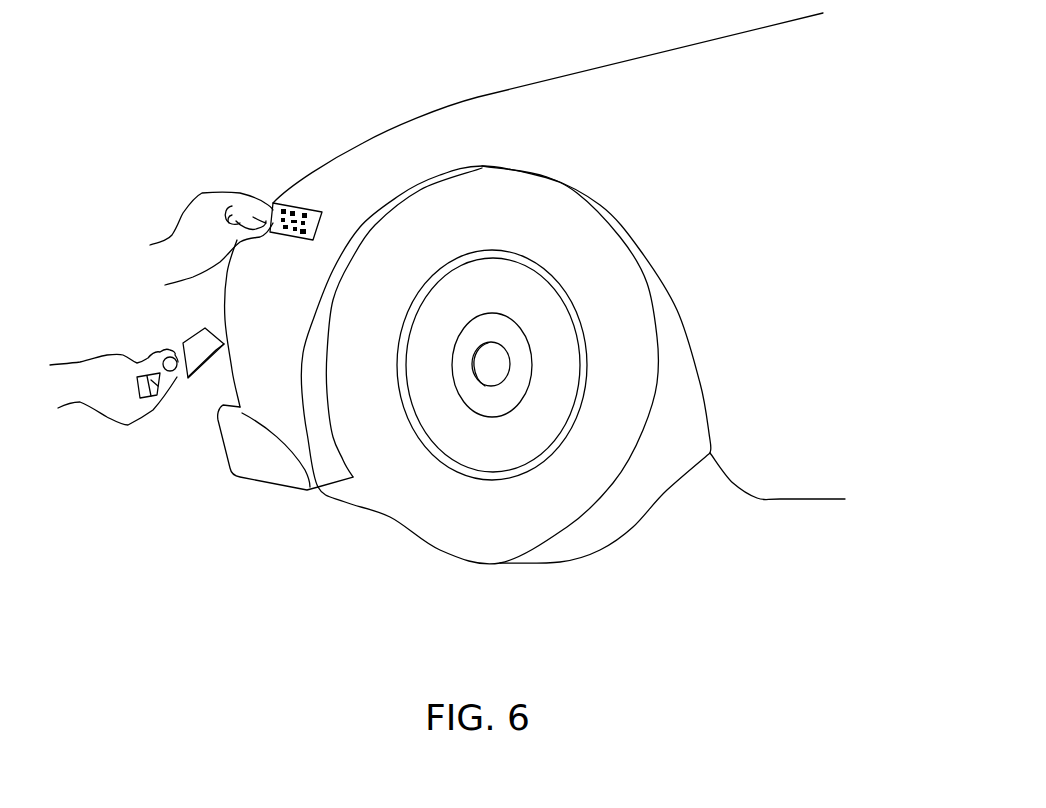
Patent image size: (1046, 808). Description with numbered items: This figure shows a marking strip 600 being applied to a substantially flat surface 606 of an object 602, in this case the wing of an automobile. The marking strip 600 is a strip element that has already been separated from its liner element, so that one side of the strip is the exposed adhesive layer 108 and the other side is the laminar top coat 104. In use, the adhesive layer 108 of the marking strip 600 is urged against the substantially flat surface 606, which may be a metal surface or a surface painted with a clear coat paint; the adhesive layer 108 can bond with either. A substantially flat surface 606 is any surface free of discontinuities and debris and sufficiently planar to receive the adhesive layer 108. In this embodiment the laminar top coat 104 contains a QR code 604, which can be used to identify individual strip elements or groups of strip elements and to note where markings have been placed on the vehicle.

The marking strip 600 is at (205, 254).
The laminar top coat 104 is at (255, 184).
The adhesive layer 108 is at (185, 340).
The object 602 is at (550, 72).
The QR code 604 is at (293, 207).
The substantially flat surface 606 is at (333, 199).